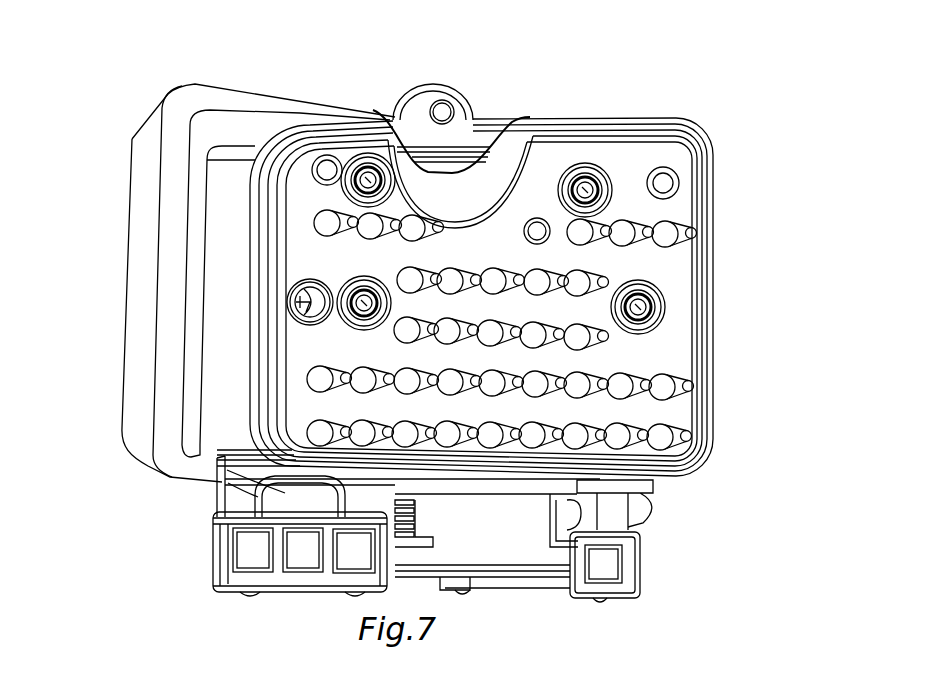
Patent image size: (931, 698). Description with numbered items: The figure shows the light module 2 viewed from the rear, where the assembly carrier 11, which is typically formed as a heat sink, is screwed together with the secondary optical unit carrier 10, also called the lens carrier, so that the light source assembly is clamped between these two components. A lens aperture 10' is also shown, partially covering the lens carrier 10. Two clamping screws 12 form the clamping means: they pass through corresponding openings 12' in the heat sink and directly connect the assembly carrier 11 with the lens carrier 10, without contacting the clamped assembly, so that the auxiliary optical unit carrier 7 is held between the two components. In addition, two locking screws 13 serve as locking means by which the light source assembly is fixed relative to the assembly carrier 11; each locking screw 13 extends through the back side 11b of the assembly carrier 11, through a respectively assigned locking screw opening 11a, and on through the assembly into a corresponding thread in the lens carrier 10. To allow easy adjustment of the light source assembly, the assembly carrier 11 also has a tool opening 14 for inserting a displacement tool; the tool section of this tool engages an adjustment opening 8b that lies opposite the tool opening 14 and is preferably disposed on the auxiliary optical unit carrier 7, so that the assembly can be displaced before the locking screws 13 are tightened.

The light module 2 is at (130, 70).
The auxiliary optical unit carrier 7 is at (300, 280).
The adjustment opening 8b is at (296, 312).
The secondary optical unit carrier 10 is at (224, 295).
The lens aperture 10' is at (223, 283).
The assembly carrier 11 is at (638, 357).
The locking screw opening 11a is at (360, 326).
The back side of the assembly carrier 11b is at (678, 325).
The clamping screw 12 is at (473, 130).
The opening 12' is at (533, 136).
The locking screw 13 is at (345, 282).
The tool opening 14 is at (307, 324).